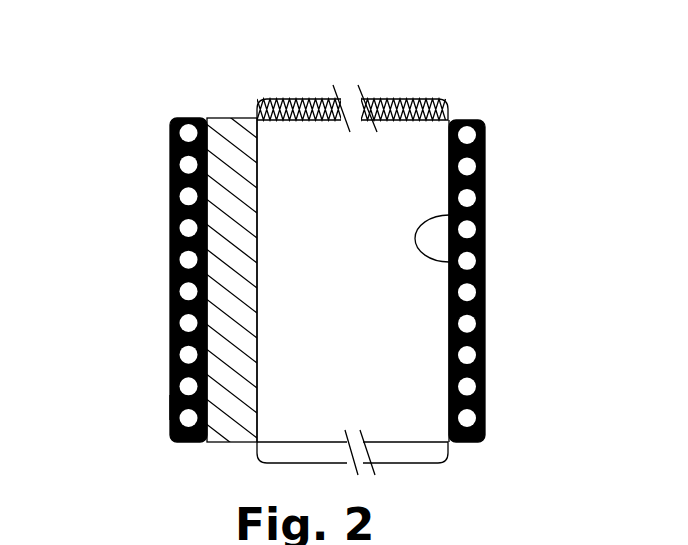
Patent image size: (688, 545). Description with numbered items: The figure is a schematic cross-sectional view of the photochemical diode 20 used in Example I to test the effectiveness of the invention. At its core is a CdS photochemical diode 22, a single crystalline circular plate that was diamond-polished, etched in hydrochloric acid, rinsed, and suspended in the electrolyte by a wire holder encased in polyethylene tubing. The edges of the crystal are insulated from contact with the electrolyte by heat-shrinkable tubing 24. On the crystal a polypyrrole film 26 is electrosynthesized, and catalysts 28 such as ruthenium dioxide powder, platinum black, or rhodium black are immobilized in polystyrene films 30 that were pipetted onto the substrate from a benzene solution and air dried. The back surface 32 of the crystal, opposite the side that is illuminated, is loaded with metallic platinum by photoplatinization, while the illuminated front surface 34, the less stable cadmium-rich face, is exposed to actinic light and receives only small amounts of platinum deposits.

The photochemical diode 20 is at (500, 123).
The CdS photochemical diode 22 is at (428, 137).
The heat-shrinkable tubing 24 is at (388, 99).
The polypyrrole film 26 is at (233, 142).
The catalysts 28 is at (188, 229).
The polystyrene films 30 is at (188, 118).
The back surface 32 is at (449, 262).
The illuminated front surface 34 is at (172, 403).